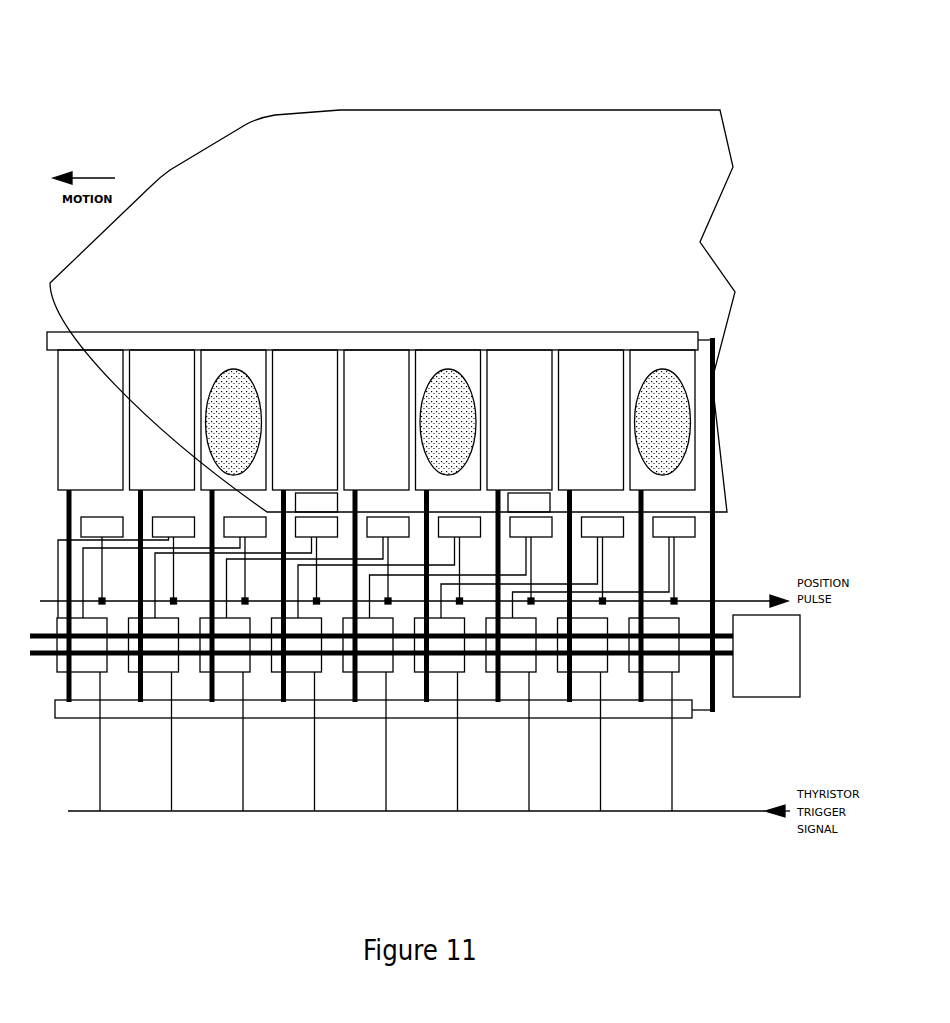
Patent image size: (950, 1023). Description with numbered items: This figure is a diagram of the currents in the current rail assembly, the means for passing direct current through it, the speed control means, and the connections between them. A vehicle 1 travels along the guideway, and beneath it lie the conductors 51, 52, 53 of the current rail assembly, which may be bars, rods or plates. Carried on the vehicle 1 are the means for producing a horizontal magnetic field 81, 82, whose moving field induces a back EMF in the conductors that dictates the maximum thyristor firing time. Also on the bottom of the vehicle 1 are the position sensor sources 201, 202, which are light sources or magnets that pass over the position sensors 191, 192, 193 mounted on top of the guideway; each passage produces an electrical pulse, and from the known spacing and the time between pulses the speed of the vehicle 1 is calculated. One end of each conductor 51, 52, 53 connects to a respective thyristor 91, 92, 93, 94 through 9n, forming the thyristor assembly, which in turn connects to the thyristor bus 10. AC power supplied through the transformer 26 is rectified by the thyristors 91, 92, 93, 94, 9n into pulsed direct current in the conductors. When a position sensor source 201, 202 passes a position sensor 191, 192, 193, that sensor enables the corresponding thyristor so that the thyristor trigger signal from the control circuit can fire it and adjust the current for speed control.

The vehicle 1 is at (228, 135).
The conductor 51 is at (112, 360).
The conductor 52 is at (160, 360).
The conductor 53 is at (212, 362).
The means for producing a horizontal magnetic field 81 is at (247, 375).
The means for producing a horizontal magnetic field 82 is at (457, 375).
The position sensor 191 is at (250, 525).
The position sensor 192 is at (320, 525).
The position sensor 193 is at (372, 523).
The position sensor source 201 is at (320, 503).
The position sensor source 202 is at (533, 502).
The thyristor 91 is at (90, 658).
The thyristor 92 is at (167, 650).
The thyristor 93 is at (240, 660).
The thyristor 94 is at (299, 660).
The thyristor 9n is at (662, 653).
The thyristor bus 10 is at (437, 708).
The transformer 26 is at (770, 677).